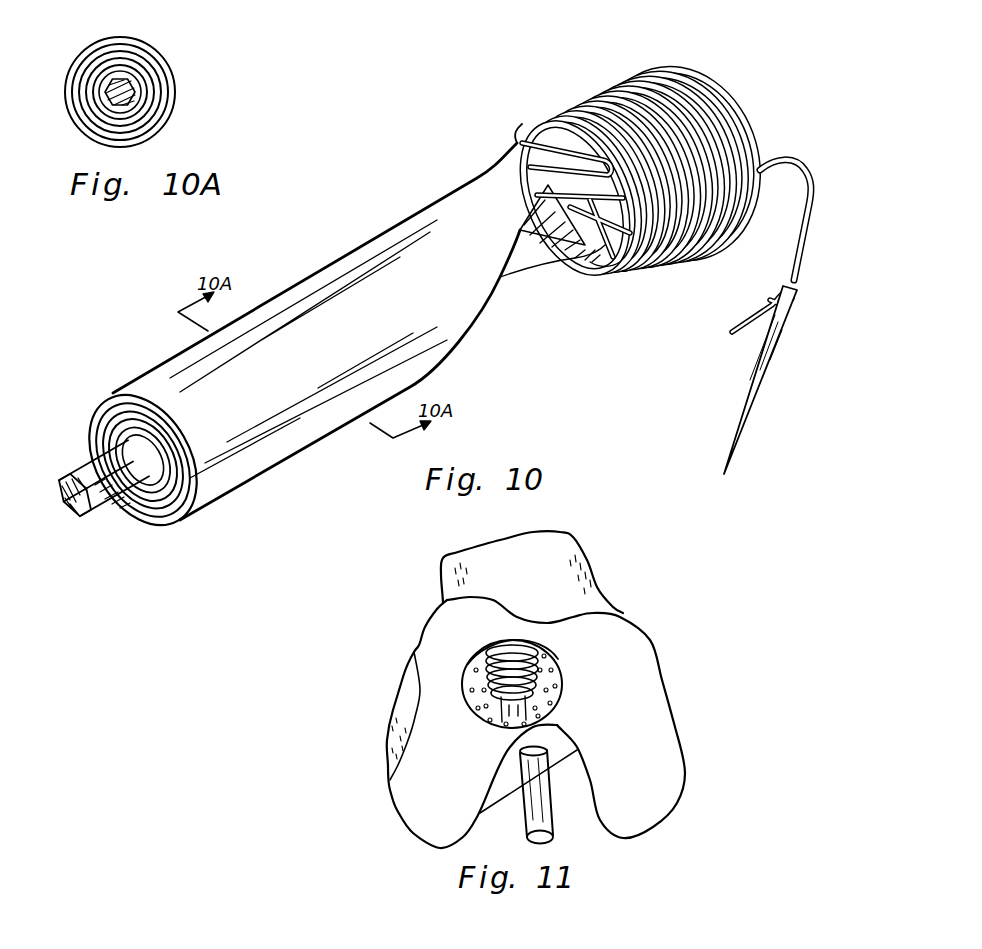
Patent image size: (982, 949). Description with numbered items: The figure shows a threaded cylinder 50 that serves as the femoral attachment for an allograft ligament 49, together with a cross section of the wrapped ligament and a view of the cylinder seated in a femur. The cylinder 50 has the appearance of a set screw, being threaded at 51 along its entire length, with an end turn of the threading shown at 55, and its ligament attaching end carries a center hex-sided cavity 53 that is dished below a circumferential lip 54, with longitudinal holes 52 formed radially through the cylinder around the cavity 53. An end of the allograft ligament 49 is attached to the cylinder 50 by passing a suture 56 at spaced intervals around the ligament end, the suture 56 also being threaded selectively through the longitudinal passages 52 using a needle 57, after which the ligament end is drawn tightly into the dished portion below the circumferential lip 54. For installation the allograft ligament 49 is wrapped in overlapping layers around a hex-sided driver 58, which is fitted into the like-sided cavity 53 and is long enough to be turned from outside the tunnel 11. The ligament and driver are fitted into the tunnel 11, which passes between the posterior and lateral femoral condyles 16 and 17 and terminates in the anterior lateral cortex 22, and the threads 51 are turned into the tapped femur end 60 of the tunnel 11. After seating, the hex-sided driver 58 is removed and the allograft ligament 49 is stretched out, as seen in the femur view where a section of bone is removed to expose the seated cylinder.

In FIG. 11, the tunnel 11 is at (503, 795).
In FIG. 11, the posterior femoral condyle 16 is at (398, 800).
In FIG. 11, the lateral femoral condyle 17 is at (682, 766).
In FIG. 11, the anterior lateral cortex 22 is at (475, 696).
In FIG. 10A, the allograft ligament 49 is at (158, 62).
In FIG. 10, the allograft ligament 49 is at (186, 352).
In FIG. 11, the allograft ligament 49 is at (552, 828).
In FIG. 10, the threaded cylinder 50 is at (663, 253).
In FIG. 10, the threads 51 is at (641, 169).
In FIG. 11, the threads 51 is at (554, 677).
In FIG. 10, the longitudinal holes 52 is at (604, 265).
In FIG. 10, the center hex-sided cavity 53 is at (598, 258).
In FIG. 10, the circumferential lip 54 is at (573, 241).
In FIG. 10, the coil terminal turn 55 is at (729, 107).
In FIG. 10, the suture 56 is at (536, 133).
In FIG. 10, the needle 57 is at (755, 372).
In FIG. 10A, the hex-sided driver 58 is at (100, 107).
In FIG. 10, the hex-sided driver 58 is at (92, 517).
In FIG. 11, the tapped femur end 60 is at (555, 650).